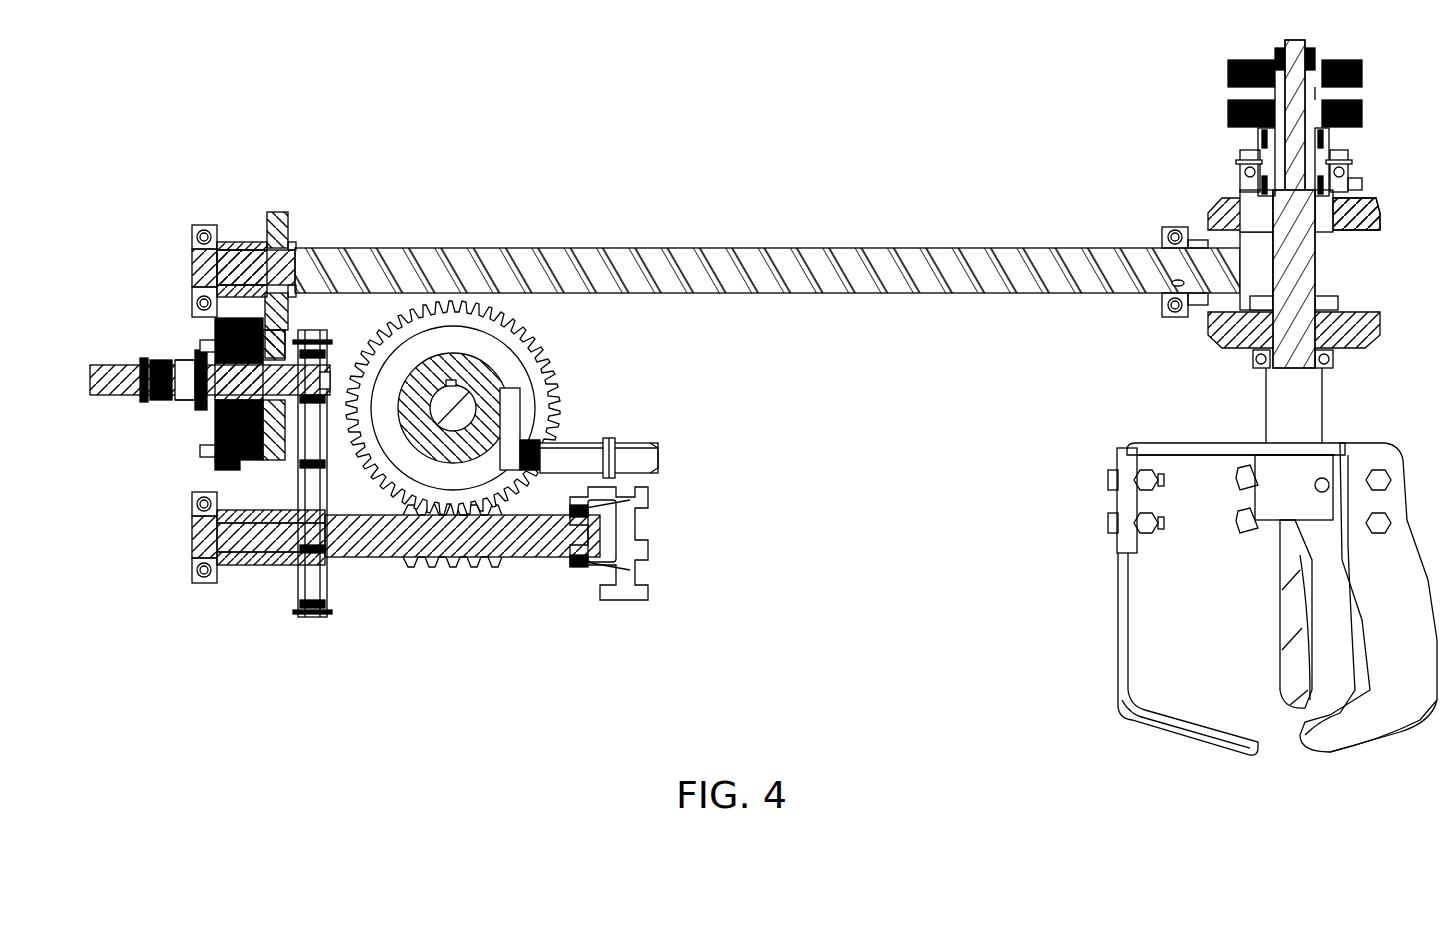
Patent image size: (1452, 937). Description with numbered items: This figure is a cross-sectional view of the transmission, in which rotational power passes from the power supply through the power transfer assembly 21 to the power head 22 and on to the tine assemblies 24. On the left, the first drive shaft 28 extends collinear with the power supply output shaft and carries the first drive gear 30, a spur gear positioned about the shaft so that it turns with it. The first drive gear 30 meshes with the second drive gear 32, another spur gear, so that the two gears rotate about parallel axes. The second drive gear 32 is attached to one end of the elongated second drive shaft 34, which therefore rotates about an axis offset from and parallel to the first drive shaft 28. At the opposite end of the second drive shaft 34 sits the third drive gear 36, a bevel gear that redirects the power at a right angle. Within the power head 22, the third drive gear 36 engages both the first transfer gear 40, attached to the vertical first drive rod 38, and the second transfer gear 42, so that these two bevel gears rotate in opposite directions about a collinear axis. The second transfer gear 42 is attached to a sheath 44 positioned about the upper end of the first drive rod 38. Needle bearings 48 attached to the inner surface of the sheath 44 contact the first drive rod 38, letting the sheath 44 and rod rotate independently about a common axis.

The power transfer assembly 21 is at (252, 646).
The power head 22 is at (1265, 24).
The tine assemblies 24 is at (1078, 630).
The first drive shaft 28 is at (110, 366).
The first drive gear 30 is at (276, 440).
The second drive gear 32 is at (282, 229).
The second drive shaft 34 is at (674, 276).
The third drive gear 36 is at (1225, 205).
The first drive rod 38 is at (1298, 270).
The first transfer gear 40 is at (1372, 312).
The second transfer gear 42 is at (1370, 218).
The sheath 44 is at (1337, 171).
The needle bearing 48 is at (1322, 132).